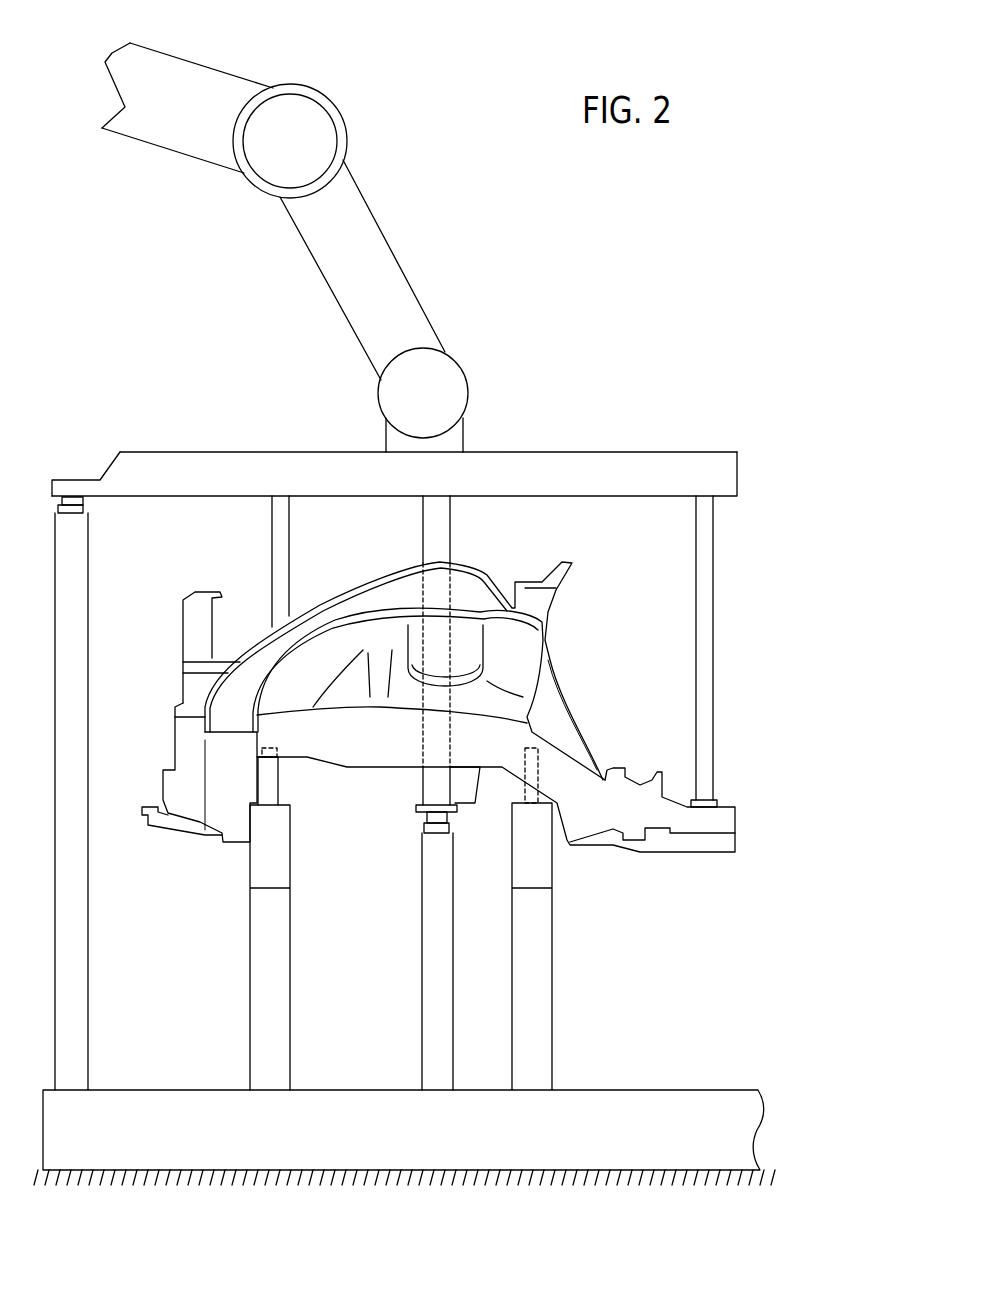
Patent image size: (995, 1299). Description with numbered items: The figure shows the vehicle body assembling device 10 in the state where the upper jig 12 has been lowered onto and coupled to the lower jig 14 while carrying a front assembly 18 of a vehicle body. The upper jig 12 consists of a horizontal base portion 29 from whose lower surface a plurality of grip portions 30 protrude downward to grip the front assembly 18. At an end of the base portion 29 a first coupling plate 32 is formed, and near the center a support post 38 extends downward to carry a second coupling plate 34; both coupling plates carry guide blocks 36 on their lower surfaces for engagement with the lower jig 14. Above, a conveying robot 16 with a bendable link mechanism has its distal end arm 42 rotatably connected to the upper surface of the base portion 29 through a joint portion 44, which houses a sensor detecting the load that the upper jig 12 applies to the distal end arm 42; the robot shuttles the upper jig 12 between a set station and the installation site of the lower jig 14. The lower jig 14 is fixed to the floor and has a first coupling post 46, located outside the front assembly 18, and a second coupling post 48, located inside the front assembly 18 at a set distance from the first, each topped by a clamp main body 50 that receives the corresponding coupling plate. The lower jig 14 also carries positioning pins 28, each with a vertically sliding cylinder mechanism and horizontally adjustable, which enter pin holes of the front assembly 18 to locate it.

The vehicle body assembling device 10 is at (612, 217).
The upper jig 12 is at (394, 439).
The lower jig 14 is at (675, 1074).
The conveying robot 16 is at (249, 58).
The front assembly 18 is at (556, 666).
The positioning pin 28 is at (285, 853).
The base portion 29 is at (229, 462).
The grip portion 30 is at (290, 523).
The first coupling plate 32 is at (70, 480).
The second coupling plate 34 is at (456, 812).
The guide block 36 is at (61, 503).
The support post 38 is at (450, 523).
The distal end arm 42 is at (375, 245).
The joint portion 44 is at (459, 380).
The first coupling post 46 is at (56, 612).
The second coupling post 48 is at (425, 1022).
The clamp main body 50 is at (86, 512).